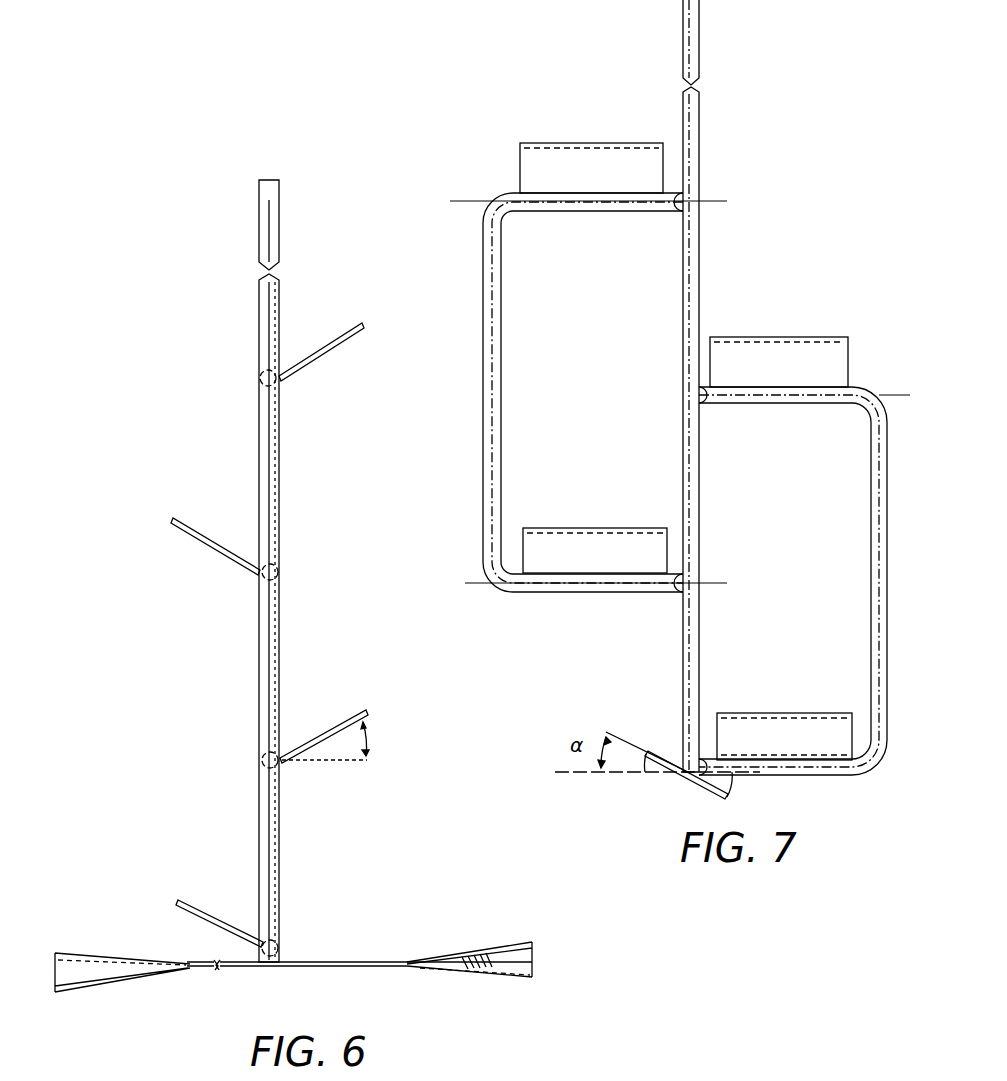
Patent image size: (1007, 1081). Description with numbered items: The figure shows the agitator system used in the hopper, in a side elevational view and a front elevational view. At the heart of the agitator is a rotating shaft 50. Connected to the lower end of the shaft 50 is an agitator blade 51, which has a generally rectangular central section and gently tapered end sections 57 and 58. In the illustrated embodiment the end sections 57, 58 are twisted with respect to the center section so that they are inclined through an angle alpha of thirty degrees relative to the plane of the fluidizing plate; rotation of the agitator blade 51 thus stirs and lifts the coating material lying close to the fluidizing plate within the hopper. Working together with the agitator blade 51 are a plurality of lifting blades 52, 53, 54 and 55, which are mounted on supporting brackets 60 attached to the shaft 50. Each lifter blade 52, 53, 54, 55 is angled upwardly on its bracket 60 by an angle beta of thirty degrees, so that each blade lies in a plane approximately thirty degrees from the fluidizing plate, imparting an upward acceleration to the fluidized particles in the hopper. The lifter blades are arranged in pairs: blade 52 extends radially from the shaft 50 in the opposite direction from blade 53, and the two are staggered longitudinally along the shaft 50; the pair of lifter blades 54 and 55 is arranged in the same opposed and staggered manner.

In FIG. 6, the rotating shaft 50 is at (269, 571).
In FIG. 7, the rotating shaft 50 is at (701, 134).
In FIG. 6, the agitator blade 51 is at (335, 960).
In FIG. 6, the lifting blade 52 is at (342, 330).
In FIG. 7, the lifting blade 52 is at (566, 142).
In FIG. 6, the lifting blade 53 is at (200, 532).
In FIG. 7, the lifting blade 53 is at (780, 345).
In FIG. 6, the lifting blade 54 is at (330, 730).
In FIG. 7, the lifting blade 54 is at (592, 532).
In FIG. 6, the lifting blade 55 is at (200, 912).
In FIG. 7, the lifting blade 55 is at (772, 720).
In FIG. 6, the tapered end section 57 is at (100, 962).
In FIG. 6, the tapered end section 58 is at (534, 960).
In FIG. 7, the supporting bracket 60 is at (505, 382).